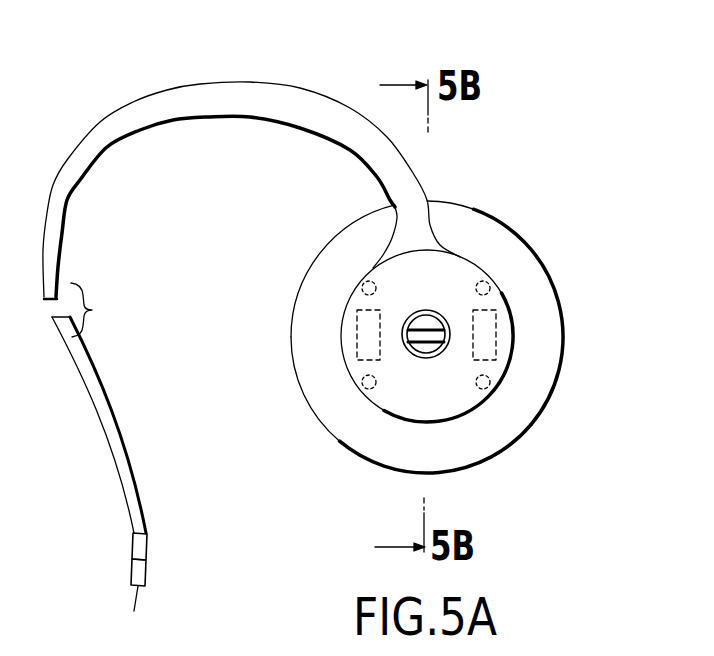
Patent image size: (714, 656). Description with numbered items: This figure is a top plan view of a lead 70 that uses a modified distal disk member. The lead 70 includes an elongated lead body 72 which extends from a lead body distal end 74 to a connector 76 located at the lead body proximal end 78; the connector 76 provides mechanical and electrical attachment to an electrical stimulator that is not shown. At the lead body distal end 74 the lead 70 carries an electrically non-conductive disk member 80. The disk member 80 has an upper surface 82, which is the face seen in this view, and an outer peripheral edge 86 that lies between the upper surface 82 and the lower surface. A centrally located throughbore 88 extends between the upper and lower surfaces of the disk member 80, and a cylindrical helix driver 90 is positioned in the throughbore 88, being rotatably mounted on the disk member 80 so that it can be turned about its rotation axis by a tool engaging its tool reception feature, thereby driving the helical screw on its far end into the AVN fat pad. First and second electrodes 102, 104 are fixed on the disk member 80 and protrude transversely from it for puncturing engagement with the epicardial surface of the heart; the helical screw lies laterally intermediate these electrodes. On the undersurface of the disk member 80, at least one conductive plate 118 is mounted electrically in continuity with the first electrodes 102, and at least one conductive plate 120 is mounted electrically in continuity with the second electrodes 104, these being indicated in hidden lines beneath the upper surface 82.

The lead 70 is at (339, 312).
The elongated lead body 72 is at (131, 125).
The lead body distal end 74 is at (312, 435).
The connector 76 is at (122, 558).
The lead body proximal end 78 is at (156, 556).
The disk member 80 is at (557, 257).
The upper surface 82 is at (548, 380).
The outer peripheral edge 86 is at (306, 275).
The throughbore 88 is at (460, 331).
The helix driver 90 is at (433, 357).
The first electrode 102 is at (364, 282).
The second electrode 104 is at (488, 282).
The conductive plate 118 is at (362, 333).
The conductive plate 120 is at (492, 333).